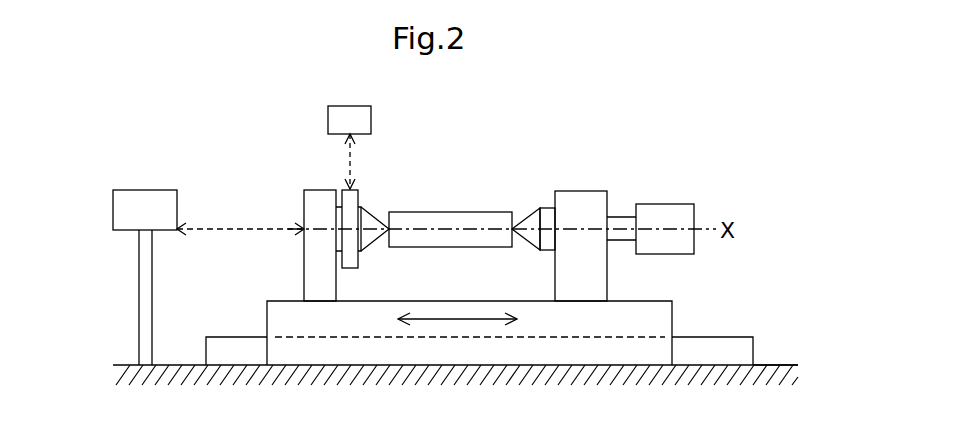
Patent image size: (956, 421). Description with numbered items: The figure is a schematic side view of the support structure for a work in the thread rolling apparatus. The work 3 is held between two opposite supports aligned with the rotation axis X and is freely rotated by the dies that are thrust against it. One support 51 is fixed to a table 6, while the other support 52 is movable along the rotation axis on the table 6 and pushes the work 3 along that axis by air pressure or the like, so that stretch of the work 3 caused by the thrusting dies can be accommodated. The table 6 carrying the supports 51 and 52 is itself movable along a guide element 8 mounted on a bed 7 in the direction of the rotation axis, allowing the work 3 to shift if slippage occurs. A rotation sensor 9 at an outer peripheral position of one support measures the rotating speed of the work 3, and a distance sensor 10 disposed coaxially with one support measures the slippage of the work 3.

The distance sensor 10 is at (130, 188).
The support 51 is at (318, 196).
The support 52 is at (580, 194).
The rotation sensor 9 is at (376, 118).
The work 3 is at (452, 212).
The table 6 is at (283, 304).
The guide element 8 is at (713, 337).
The bed 7 is at (762, 364).